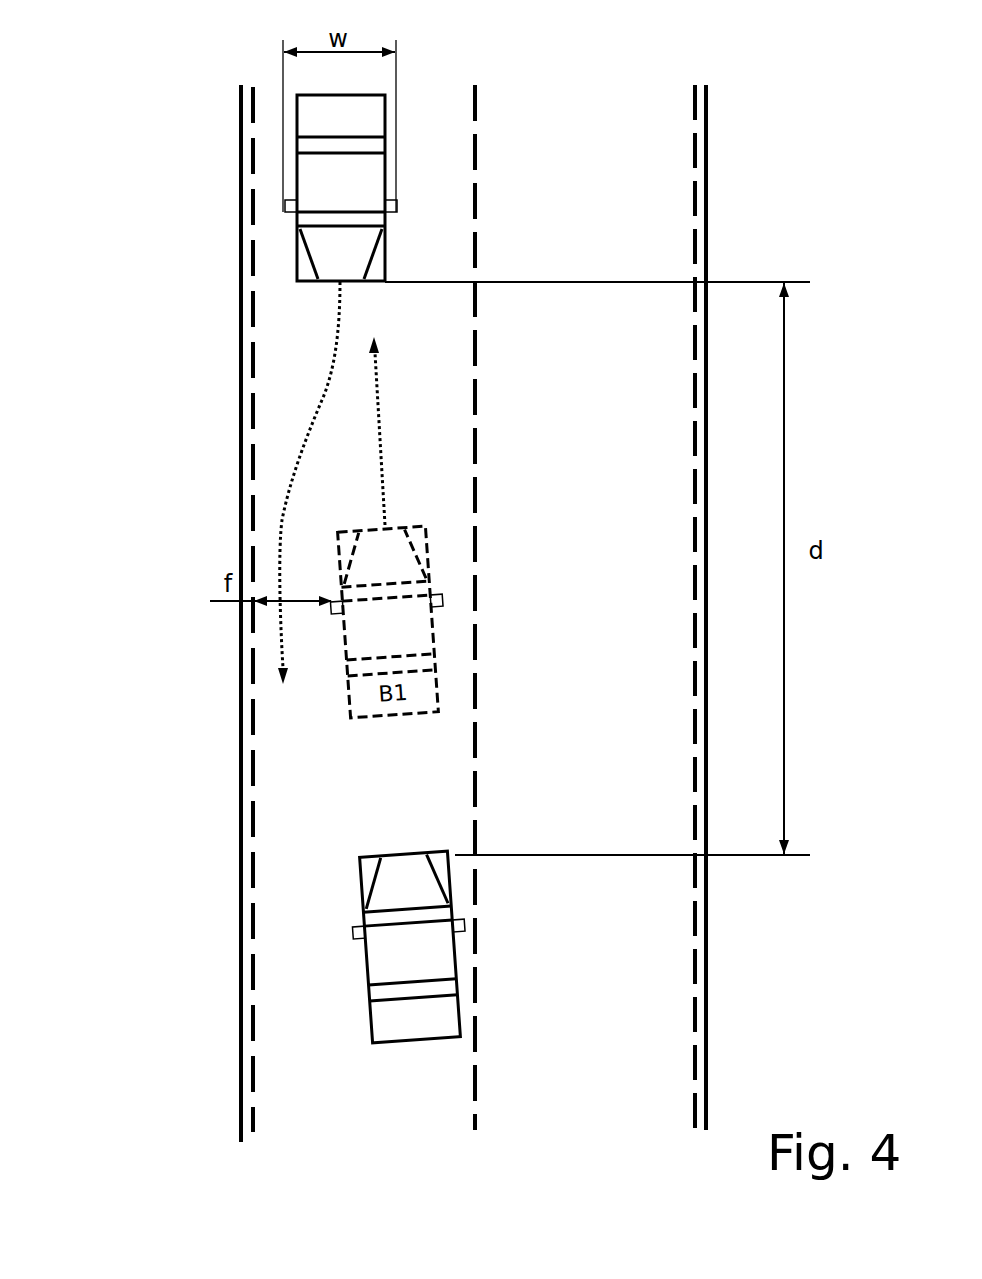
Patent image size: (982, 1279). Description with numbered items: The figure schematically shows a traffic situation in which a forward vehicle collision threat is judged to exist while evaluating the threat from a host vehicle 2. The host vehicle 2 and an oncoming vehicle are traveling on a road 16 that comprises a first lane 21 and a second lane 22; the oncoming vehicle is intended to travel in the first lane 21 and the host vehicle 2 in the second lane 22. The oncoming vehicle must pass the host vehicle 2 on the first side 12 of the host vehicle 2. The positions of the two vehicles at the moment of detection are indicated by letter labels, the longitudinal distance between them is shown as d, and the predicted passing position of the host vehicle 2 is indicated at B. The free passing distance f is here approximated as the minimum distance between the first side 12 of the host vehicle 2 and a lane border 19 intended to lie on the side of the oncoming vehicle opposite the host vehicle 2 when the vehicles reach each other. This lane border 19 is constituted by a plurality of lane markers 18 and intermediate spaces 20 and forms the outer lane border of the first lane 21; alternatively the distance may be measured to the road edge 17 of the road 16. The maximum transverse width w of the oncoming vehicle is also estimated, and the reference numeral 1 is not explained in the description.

The vehicle at second position A2 1 is at (357, 182).
The host vehicle 2 is at (420, 967).
The first side of the host vehicle 12 is at (368, 957).
The road 16 is at (560, 150).
The road edge 17 is at (240, 425).
The lane markers 18 is at (255, 733).
The lane border 19 is at (258, 1150).
The intermediate spaces 20 is at (257, 848).
The first lane 21 is at (395, 1096).
The second lane 22 is at (575, 1062).